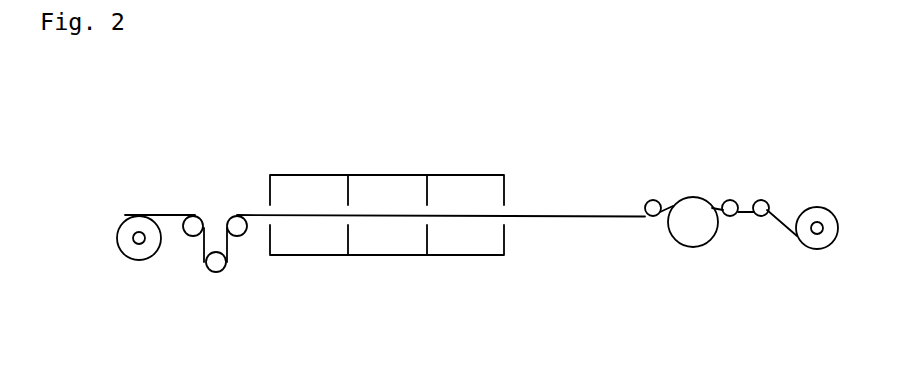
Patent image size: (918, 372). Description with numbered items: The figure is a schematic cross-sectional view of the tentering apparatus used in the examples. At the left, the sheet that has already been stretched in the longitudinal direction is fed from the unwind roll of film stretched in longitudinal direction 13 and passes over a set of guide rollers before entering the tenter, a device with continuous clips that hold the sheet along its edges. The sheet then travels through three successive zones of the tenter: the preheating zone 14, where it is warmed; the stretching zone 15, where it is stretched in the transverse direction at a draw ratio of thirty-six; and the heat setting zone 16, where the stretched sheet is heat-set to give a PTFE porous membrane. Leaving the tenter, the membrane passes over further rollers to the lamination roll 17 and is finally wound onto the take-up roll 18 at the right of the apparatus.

The unwind roll of film stretched in longitudinal direction 13 is at (132, 247).
The preheating zone 14 is at (307, 242).
The stretching zone 15 is at (385, 242).
The heat setting zone 16 is at (465, 242).
The lamination roll 17 is at (693, 233).
The take-up roll 18 is at (817, 243).